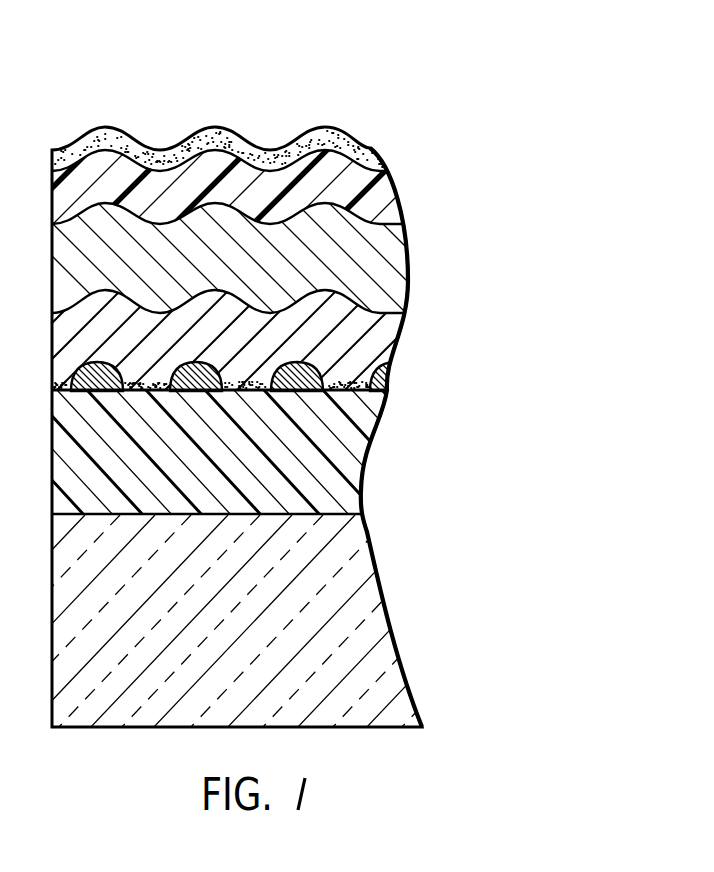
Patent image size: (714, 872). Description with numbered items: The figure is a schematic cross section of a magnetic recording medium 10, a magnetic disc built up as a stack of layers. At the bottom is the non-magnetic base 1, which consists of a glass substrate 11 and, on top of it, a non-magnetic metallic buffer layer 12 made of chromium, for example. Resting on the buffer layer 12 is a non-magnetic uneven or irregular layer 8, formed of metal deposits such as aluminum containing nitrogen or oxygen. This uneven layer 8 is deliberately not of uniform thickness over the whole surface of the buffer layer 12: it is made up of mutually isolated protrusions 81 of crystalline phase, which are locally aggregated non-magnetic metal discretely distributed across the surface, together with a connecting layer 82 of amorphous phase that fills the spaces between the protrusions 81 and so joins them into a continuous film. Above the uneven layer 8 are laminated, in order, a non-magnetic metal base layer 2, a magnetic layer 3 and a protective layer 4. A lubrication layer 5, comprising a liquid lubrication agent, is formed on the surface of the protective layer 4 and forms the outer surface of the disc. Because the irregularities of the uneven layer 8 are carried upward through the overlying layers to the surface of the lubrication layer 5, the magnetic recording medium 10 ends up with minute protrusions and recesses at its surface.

The magnetic recording medium 10 is at (301, 370).
The lubrication layer 5 is at (352, 144).
The protective layer 4 is at (386, 199).
The magnetic layer 3 is at (392, 262).
The non-magnetic metal base layer 2 is at (404, 328).
The non-magnetic uneven layer 8 is at (288, 366).
The connecting layer 82 is at (384, 350).
The protrusions 81 is at (388, 376).
The non-magnetic base 1 is at (301, 559).
The non-magnetic metallic buffer layer 12 is at (352, 464).
The glass substrate 11 is at (468, 552).